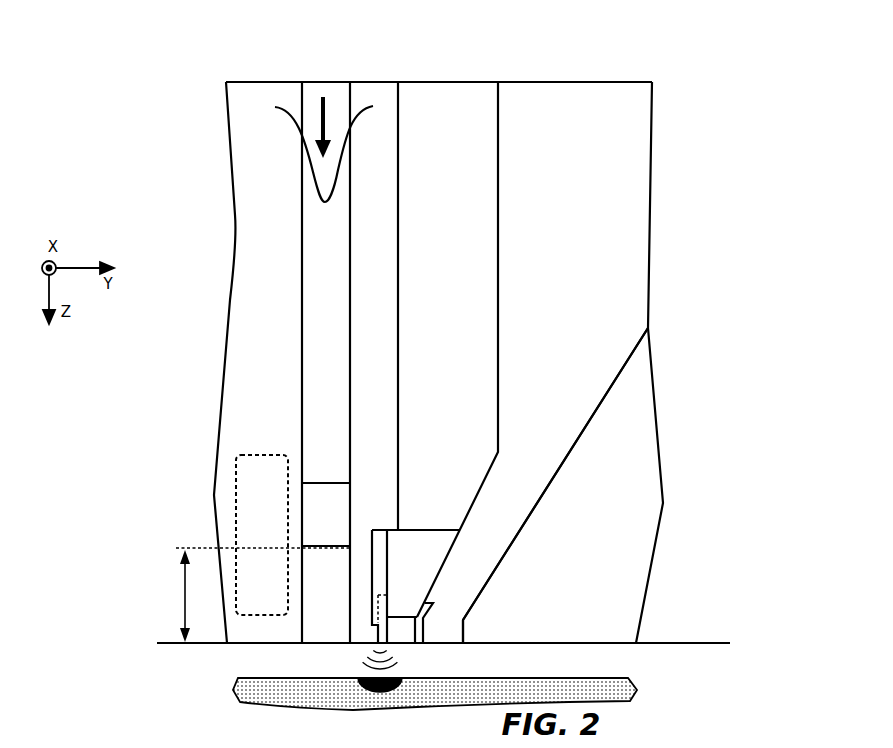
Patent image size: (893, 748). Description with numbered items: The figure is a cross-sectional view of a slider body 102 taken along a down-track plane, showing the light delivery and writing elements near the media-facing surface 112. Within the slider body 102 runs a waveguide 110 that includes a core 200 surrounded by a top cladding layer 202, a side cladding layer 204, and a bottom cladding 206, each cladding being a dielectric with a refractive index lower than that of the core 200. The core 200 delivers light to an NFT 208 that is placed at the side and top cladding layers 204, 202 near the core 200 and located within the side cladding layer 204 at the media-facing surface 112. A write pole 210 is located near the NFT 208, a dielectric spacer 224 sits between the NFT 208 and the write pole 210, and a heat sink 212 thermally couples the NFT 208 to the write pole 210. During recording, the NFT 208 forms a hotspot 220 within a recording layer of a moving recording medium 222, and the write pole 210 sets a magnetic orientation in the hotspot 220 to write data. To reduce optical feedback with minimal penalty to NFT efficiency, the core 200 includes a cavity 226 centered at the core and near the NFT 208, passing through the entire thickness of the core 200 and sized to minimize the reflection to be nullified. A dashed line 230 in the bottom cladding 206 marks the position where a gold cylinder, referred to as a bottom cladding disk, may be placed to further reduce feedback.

The slider body 102 is at (216, 40).
The waveguide 110 is at (226, 183).
The media-facing surface 112 is at (720, 645).
The core 200 is at (327, 92).
The top cladding layer 202 is at (484, 100).
The side cladding layer 204 is at (373, 92).
The bottom cladding 206 is at (284, 86).
The NFT 208 is at (373, 572).
The write pole 210 is at (470, 607).
The heat sink 212 is at (412, 530).
The hotspot 220 is at (378, 692).
The recording medium 222 is at (592, 678).
The dielectric spacer 224 is at (402, 645).
The cavity 226 is at (311, 520).
The dashed line 230 is at (236, 470).